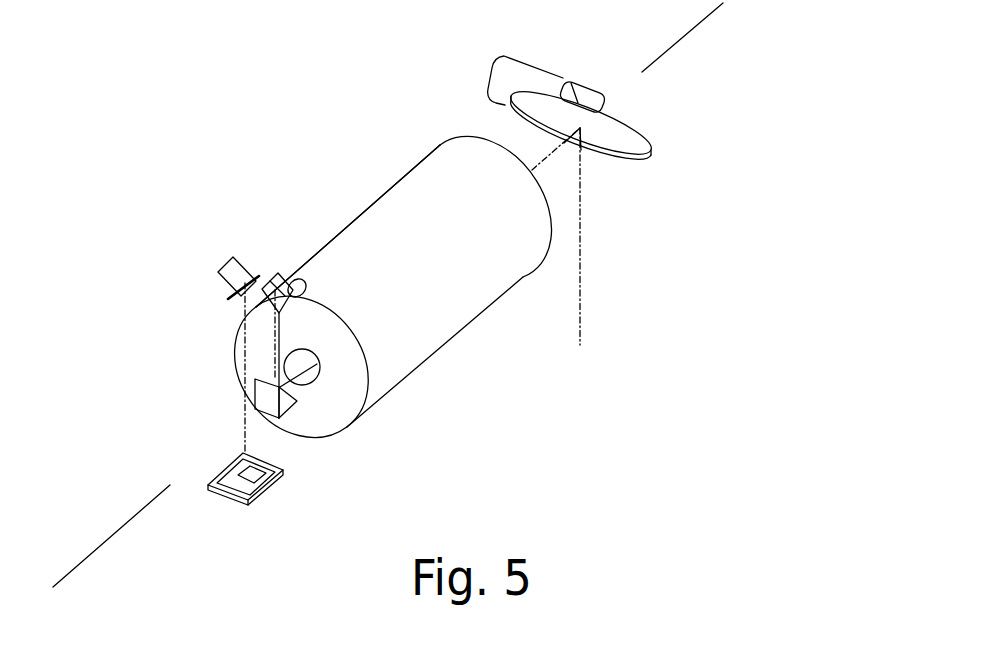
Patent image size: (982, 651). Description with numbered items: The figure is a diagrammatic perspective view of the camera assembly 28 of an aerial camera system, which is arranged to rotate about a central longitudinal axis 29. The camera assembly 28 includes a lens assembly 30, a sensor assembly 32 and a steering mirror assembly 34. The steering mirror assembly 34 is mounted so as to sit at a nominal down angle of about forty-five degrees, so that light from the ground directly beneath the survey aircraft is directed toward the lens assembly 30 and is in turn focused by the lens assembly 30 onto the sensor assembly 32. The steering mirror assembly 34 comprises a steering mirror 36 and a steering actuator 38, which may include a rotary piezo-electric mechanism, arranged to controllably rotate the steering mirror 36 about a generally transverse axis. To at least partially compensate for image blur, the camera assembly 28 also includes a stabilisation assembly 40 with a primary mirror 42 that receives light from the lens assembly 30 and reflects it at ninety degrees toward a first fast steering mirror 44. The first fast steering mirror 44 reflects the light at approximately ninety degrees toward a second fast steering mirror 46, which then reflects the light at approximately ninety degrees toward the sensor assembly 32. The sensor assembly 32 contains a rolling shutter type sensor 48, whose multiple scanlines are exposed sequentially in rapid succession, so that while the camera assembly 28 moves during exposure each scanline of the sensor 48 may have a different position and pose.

The camera assembly 28 is at (275, 163).
The central longitudinal axis 29 is at (127, 522).
The lens assembly 30 is at (410, 185).
The sensor assembly 32 is at (223, 467).
The steering mirror assembly 34 is at (739, 54).
The steering mirror 36 is at (650, 142).
The steering actuator 38 is at (523, 70).
The stabilisation assembly 40 is at (211, 313).
The primary mirror 42 is at (282, 389).
The first fast steering mirror 44 is at (303, 279).
The second fast steering mirror 46 is at (233, 258).
The rolling shutter (RS)-type sensor 48 is at (260, 483).